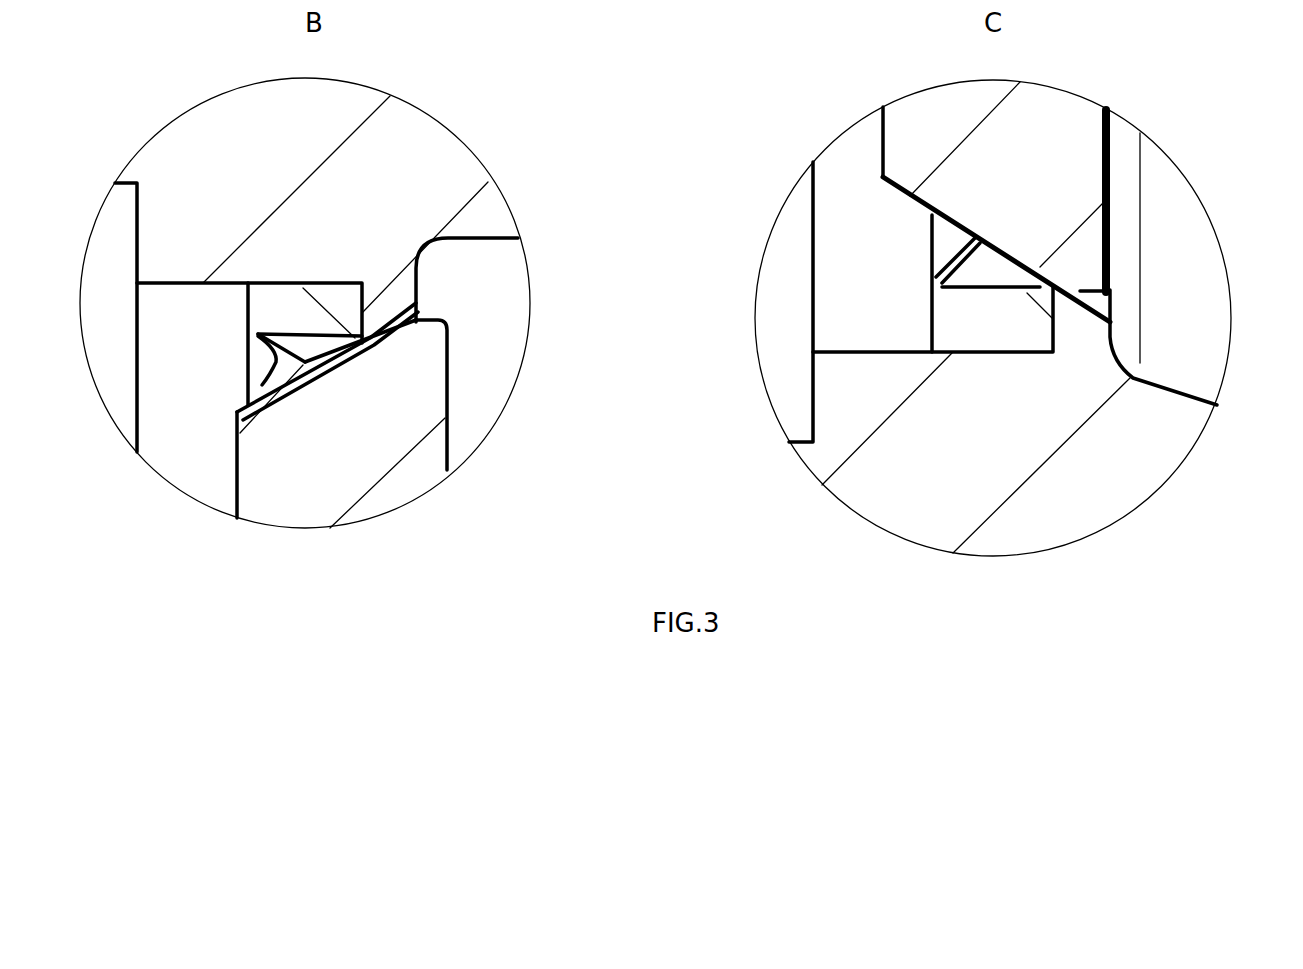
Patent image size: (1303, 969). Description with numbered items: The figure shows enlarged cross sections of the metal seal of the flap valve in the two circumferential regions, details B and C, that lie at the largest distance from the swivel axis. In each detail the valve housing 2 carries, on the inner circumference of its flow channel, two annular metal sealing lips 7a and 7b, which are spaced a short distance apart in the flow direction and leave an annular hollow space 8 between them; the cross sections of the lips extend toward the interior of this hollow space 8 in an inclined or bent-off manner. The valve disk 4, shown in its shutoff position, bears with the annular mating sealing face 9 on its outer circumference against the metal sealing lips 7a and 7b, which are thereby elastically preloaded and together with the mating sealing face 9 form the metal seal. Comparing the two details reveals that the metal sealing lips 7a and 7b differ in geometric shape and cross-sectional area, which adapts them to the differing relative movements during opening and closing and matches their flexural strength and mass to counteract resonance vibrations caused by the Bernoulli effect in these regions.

The valve housing 2 is at (392, 195).
The valve disk 4 is at (403, 368).
The metal sealing lip 7a is at (237, 415).
The metal sealing lip 7b is at (333, 353).
The annular hollow space 8 is at (303, 340).
The mating sealing face 9 is at (313, 357).